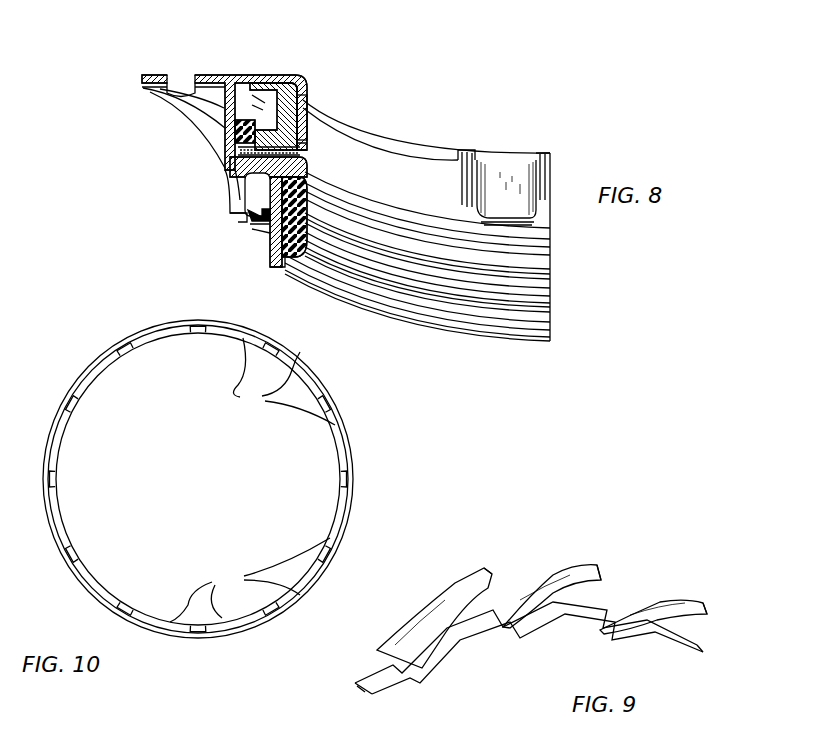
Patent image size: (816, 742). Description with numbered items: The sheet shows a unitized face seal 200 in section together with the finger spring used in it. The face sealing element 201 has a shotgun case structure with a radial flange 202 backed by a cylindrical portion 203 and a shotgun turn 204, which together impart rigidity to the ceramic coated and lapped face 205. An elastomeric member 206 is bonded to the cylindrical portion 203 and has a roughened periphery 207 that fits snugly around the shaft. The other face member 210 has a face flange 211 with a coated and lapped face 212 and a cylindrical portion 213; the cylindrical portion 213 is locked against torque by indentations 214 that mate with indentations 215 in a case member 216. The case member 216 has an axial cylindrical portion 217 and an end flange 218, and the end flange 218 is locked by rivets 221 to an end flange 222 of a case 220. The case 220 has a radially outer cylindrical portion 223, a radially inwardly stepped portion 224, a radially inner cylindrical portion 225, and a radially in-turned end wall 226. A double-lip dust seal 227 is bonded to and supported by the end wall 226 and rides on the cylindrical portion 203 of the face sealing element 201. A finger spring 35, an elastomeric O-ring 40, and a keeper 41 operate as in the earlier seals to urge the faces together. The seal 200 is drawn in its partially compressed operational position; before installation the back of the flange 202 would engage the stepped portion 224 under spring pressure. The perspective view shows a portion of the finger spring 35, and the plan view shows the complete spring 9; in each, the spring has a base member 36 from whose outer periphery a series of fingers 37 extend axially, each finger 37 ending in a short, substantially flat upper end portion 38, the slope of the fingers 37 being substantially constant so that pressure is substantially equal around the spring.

In FIG. 8, the seal 200 is at (176, 76).
In FIG. 8, the rivets 221 is at (178, 76).
In FIG. 8, the end flange 218 is at (215, 75).
In FIG. 8, the keeper 41 is at (248, 128).
In FIG. 8, the finger spring 35 is at (262, 94).
In FIG. 8, the axial cylindrical portion 217 is at (300, 128).
In FIG. 8, the face member 210 is at (318, 130).
In FIG. 8, the cylindrical portion 213 is at (413, 146).
In FIG. 8, the case member 216 is at (457, 150).
In FIG. 8, the indentations 215 is at (487, 162).
In FIG. 8, the indentations 214 is at (515, 190).
In FIG. 8, the end flange 222 is at (147, 90).
In FIG. 8, the case 220 is at (158, 100).
In FIG. 8, the radially outer axial or cylindrical portion 223 is at (200, 104).
In FIG. 8, the elastomeric O-ring 40 is at (236, 130).
In FIG. 8, the face flange 211 is at (240, 150).
In FIG. 8, the coated and lapped face 212 is at (250, 153).
In FIG. 8, the ceramic coated and lapped face 205 is at (308, 151).
In FIG. 8, the shotgun turn 204 is at (312, 178).
In FIG. 8, the face sealing element 201 is at (342, 190).
In FIG. 8, the radially inwardly stepped portion 224 is at (230, 174).
In FIG. 8, the radial flange 202 is at (252, 195).
In FIG. 8, the radially inner axial or cylindrical portion 225 is at (243, 210).
In FIG. 8, the radially in-turned end wall 226 is at (255, 216).
In FIG. 8, the double-lip dust seal 227 is at (262, 225).
In FIG. 8, the cylindrical portion 203 is at (276, 247).
In FIG. 8, the elastomeric member 206 is at (285, 266).
In FIG. 8, the roughened periphery 207 is at (355, 275).
In FIG. 10, the ring 9 is at (352, 399).
In FIG. 10, the base member 36 is at (336, 557).
In FIG. 9, the base member 36 is at (365, 678).
In FIG. 10, the fingers 37 is at (252, 480).
In FIG. 9, the fingers 37 is at (450, 586).
In FIG. 9, the upper end portion 38 is at (490, 566).